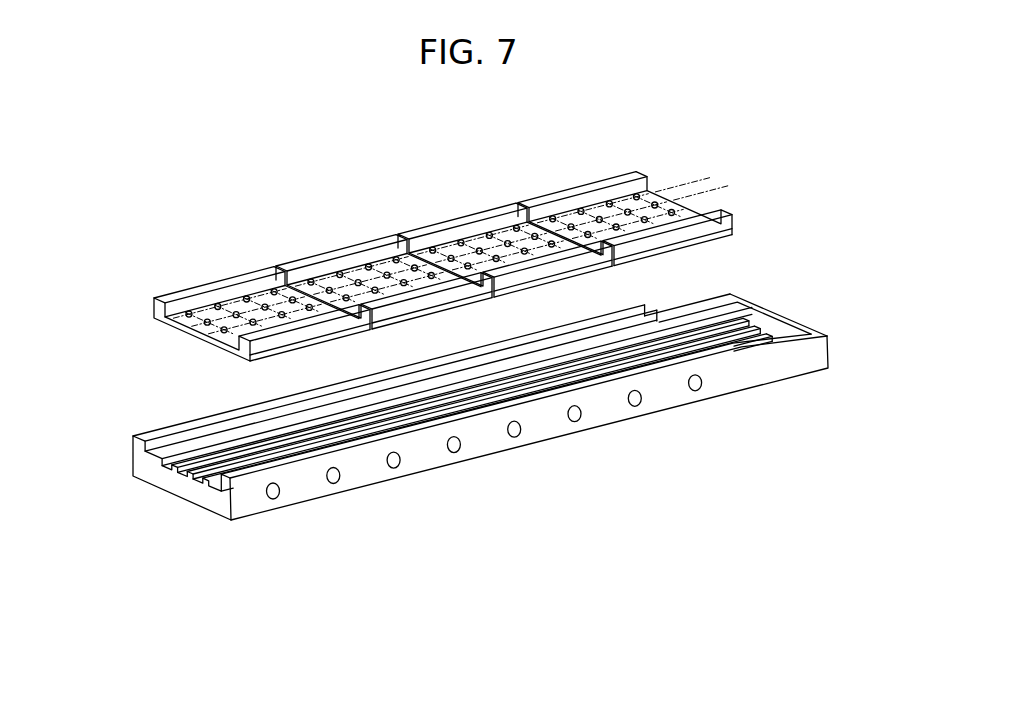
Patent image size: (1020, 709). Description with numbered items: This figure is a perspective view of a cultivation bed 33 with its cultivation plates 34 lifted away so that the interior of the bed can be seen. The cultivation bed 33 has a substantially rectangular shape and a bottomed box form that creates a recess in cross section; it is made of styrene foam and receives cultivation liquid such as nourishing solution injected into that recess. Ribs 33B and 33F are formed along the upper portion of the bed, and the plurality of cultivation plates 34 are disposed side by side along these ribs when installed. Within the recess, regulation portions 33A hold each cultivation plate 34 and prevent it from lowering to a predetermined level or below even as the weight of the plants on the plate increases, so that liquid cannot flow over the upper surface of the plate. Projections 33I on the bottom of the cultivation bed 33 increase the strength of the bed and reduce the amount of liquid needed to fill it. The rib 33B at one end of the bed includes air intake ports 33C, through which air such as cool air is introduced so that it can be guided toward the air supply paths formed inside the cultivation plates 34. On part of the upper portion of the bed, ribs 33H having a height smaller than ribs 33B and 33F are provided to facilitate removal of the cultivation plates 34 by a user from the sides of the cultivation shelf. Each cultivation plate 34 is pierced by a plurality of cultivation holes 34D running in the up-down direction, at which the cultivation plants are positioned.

The cultivation bed 33 is at (450, 409).
The regulation portion 33A is at (160, 452).
The rib 33B is at (183, 435).
The air intake port 33C is at (452, 448).
The rib 33F is at (545, 402).
The rib 33H is at (695, 305).
The projection 33I is at (197, 487).
The cultivation plate 34 is at (443, 244).
The cultivation hole 34D is at (507, 242).